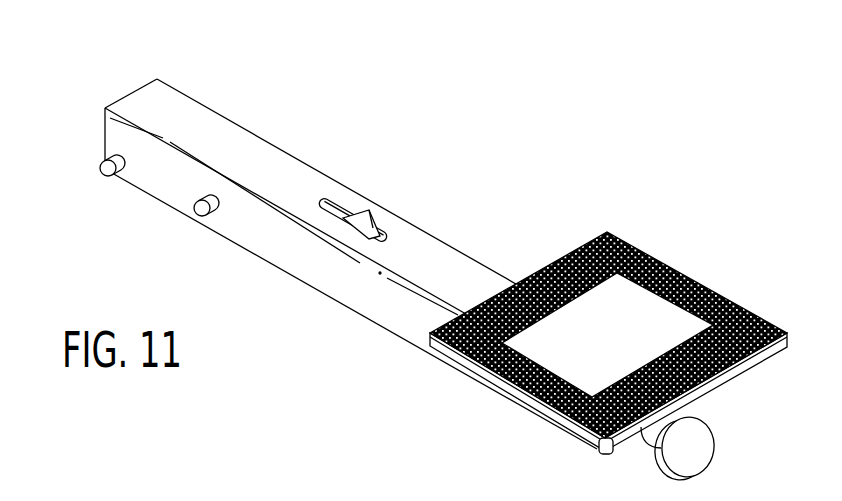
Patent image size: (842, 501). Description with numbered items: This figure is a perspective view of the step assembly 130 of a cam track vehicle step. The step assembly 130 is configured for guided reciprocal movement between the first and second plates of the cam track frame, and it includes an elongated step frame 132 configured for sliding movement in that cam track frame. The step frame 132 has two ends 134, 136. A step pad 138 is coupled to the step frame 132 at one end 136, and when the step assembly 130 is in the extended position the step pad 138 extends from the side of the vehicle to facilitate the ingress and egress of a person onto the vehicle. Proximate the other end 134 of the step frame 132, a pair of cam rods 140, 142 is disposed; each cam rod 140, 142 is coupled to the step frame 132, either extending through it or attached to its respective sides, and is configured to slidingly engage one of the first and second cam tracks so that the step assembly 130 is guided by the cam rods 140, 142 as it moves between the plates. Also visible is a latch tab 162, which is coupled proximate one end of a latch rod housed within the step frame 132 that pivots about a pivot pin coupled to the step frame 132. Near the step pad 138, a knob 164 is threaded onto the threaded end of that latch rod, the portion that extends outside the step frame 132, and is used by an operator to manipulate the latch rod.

The step assembly 130 is at (415, 252).
The step frame 132 is at (312, 234).
The other end of the step frame 134 is at (124, 76).
The one end of the step frame 136 is at (722, 437).
The step pad 138 is at (697, 280).
The cam rod 140 is at (104, 172).
The cam rod 142 is at (200, 214).
The latch tab 162 is at (363, 212).
The knob 164 is at (690, 455).